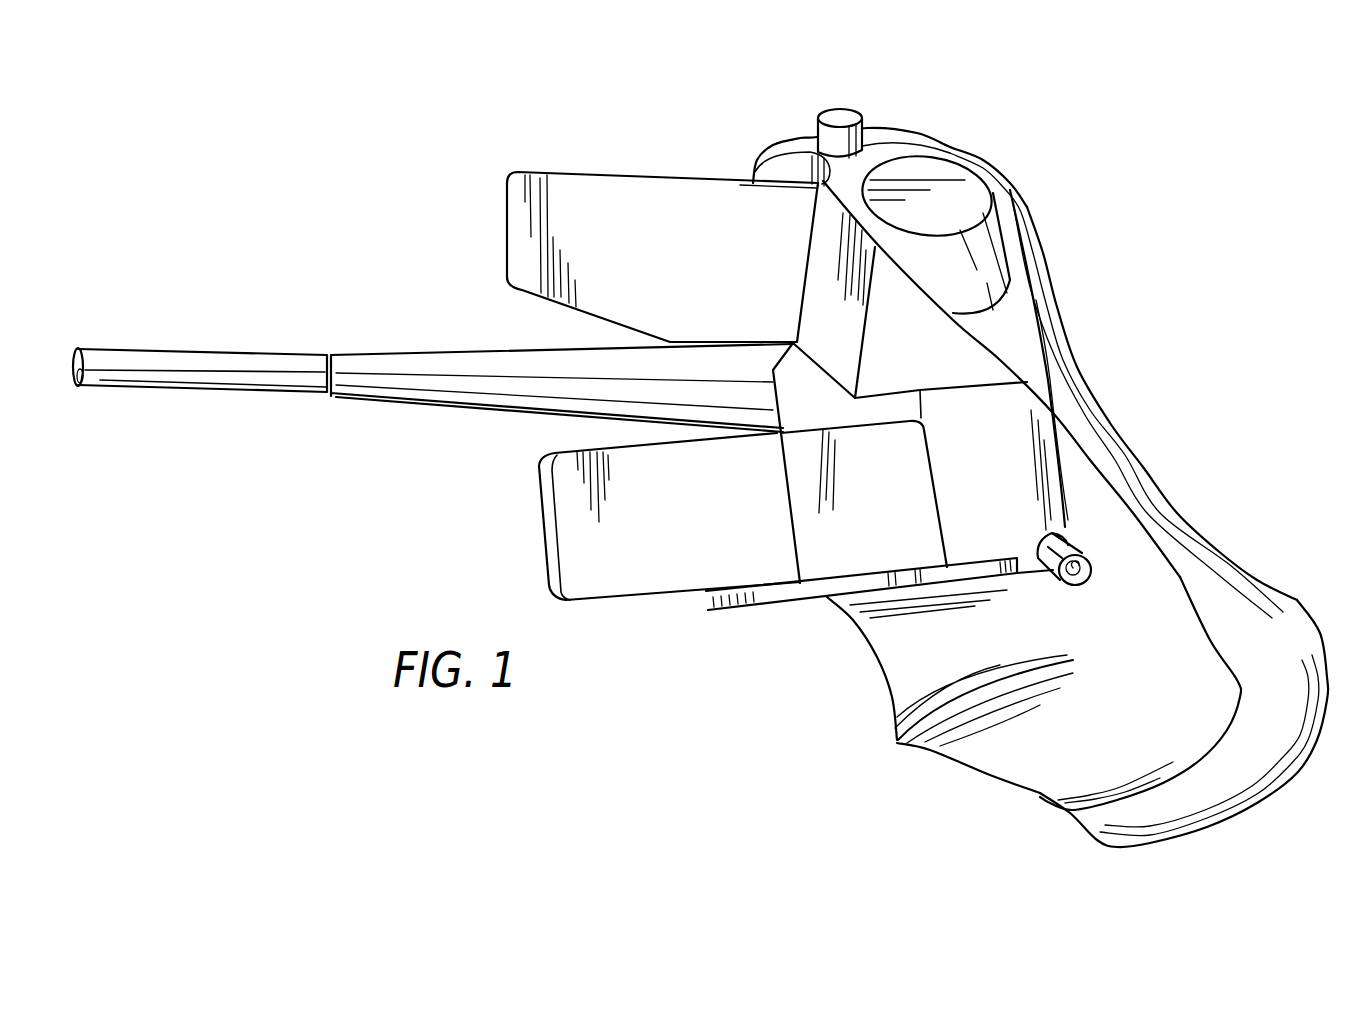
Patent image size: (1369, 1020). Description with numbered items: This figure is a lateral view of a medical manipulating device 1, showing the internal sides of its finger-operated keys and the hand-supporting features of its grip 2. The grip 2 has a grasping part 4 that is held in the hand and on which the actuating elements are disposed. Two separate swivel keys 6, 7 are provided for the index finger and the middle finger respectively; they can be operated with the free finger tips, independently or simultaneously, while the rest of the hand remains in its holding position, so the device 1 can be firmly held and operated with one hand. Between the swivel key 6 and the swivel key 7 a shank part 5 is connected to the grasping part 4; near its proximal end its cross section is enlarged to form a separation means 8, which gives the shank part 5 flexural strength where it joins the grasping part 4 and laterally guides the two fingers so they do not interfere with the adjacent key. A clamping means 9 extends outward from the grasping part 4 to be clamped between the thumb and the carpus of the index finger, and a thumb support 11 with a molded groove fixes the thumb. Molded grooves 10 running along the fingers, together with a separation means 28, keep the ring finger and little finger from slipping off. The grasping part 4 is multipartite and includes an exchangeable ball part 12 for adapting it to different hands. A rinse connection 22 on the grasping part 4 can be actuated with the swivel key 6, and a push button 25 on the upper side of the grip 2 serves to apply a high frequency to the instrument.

The medical manipulating device 1 is at (650, 772).
The grip 2 is at (900, 797).
The grasping part 4 is at (1063, 372).
The shank part 5 is at (225, 372).
The swivel key 6 is at (655, 258).
The swivel key 7 is at (676, 545).
The separation means 8 is at (497, 388).
The clamping means 9 is at (908, 138).
The molded grooves 10 is at (890, 673).
The thumb support 11 is at (972, 185).
The ball part 12 is at (1245, 597).
The rinse connection 22 is at (1082, 577).
The push button 25 is at (845, 118).
The separation means 28 is at (790, 593).